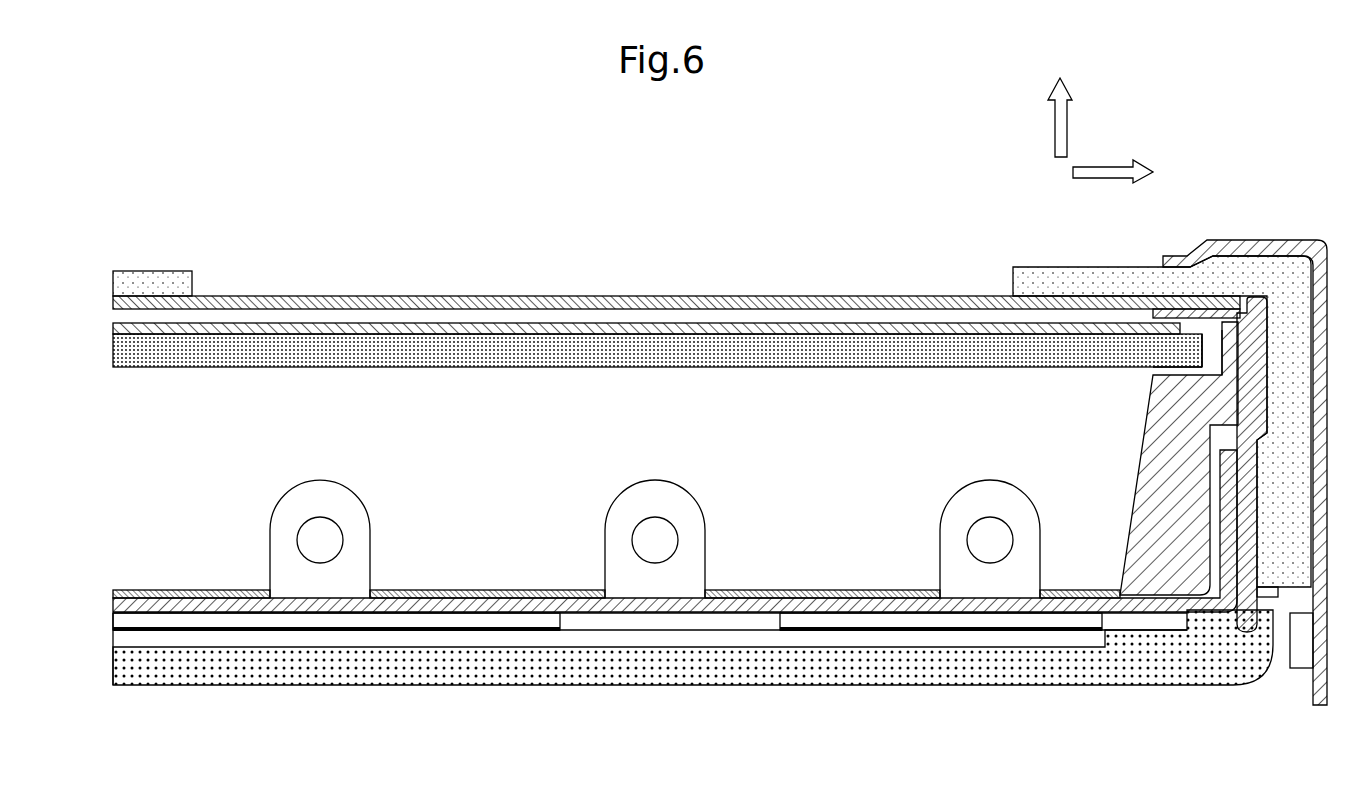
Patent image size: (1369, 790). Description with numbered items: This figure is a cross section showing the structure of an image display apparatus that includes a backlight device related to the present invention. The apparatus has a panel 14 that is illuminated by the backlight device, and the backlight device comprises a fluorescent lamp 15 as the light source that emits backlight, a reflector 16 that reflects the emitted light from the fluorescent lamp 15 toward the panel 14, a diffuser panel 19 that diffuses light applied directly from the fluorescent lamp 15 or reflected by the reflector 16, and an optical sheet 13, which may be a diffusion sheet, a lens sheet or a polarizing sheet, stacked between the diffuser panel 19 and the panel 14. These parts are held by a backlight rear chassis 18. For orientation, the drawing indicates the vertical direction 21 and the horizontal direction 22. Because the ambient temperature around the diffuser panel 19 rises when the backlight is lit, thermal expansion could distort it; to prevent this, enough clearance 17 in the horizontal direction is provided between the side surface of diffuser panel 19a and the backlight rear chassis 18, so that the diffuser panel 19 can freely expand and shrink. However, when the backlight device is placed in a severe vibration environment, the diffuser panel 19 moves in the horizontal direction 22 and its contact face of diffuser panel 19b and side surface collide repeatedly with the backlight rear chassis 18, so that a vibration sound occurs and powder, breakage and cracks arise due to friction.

The optical sheet 13 is at (765, 327).
The panel 14 is at (460, 297).
The fluorescent lamp 15 is at (633, 520).
The reflector 16 is at (737, 595).
The clearance in horizontal direction 17 is at (1200, 373).
The backlight rear chassis 18 is at (1178, 533).
The diffuser panel 19 is at (870, 350).
The side surface of diffuser panel 19a is at (1195, 353).
The contact face of diffuser panel 19b is at (1168, 367).
The vertical direction 21 is at (1151, 101).
The horizontal direction 22 is at (1211, 191).